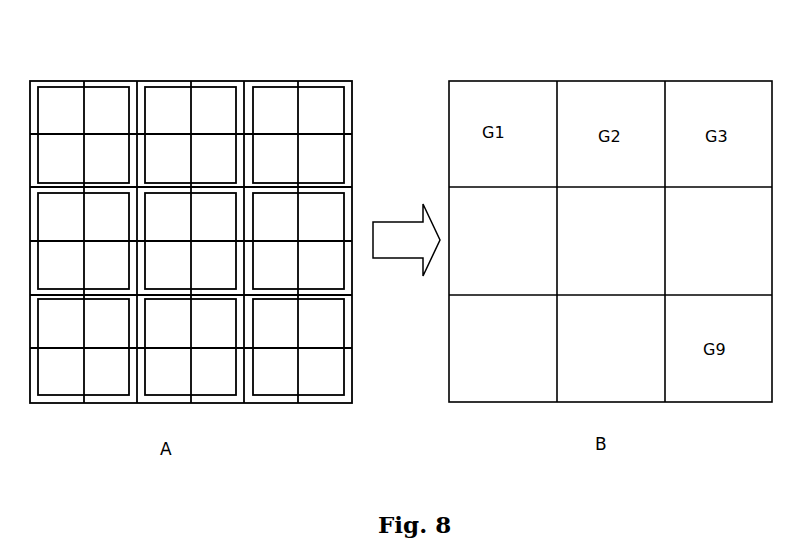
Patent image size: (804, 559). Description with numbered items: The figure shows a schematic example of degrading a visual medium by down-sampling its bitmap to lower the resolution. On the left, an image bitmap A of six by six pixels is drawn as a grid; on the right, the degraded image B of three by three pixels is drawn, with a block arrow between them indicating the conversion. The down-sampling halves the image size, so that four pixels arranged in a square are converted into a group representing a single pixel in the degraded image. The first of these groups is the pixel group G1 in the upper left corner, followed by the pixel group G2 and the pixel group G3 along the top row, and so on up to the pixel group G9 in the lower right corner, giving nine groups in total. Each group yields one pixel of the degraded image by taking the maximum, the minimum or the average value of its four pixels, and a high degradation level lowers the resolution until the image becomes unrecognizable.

The pixel group G1 is at (97, 108).
The pixel group G2 is at (210, 105).
The pixel group G3 is at (312, 105).
The pixel group G9 is at (313, 380).